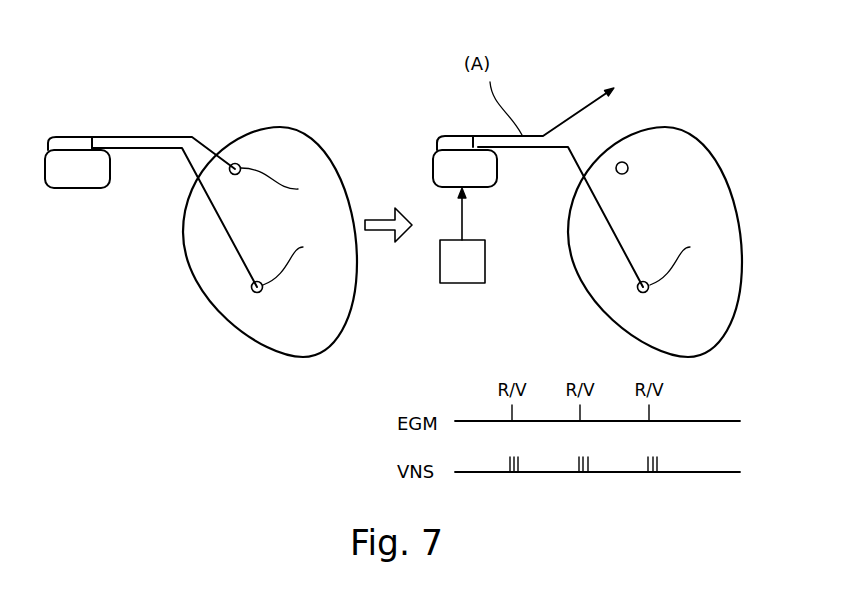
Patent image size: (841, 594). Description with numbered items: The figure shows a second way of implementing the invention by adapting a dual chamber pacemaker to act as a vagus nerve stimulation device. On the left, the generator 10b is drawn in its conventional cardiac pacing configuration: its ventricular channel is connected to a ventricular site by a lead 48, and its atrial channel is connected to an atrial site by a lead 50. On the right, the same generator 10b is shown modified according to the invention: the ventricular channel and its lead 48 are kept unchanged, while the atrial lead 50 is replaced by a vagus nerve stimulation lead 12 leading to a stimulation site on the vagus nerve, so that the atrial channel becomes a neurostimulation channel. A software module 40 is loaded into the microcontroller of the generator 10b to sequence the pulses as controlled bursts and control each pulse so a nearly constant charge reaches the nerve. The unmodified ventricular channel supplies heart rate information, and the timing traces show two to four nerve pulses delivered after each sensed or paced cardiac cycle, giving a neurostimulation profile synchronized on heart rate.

The generator 10b is at (436, 172).
The atrial lead 50 is at (222, 158).
The ventricular lead 48 is at (241, 258).
The VNS lead 12 is at (575, 114).
The software module 40 is at (466, 283).